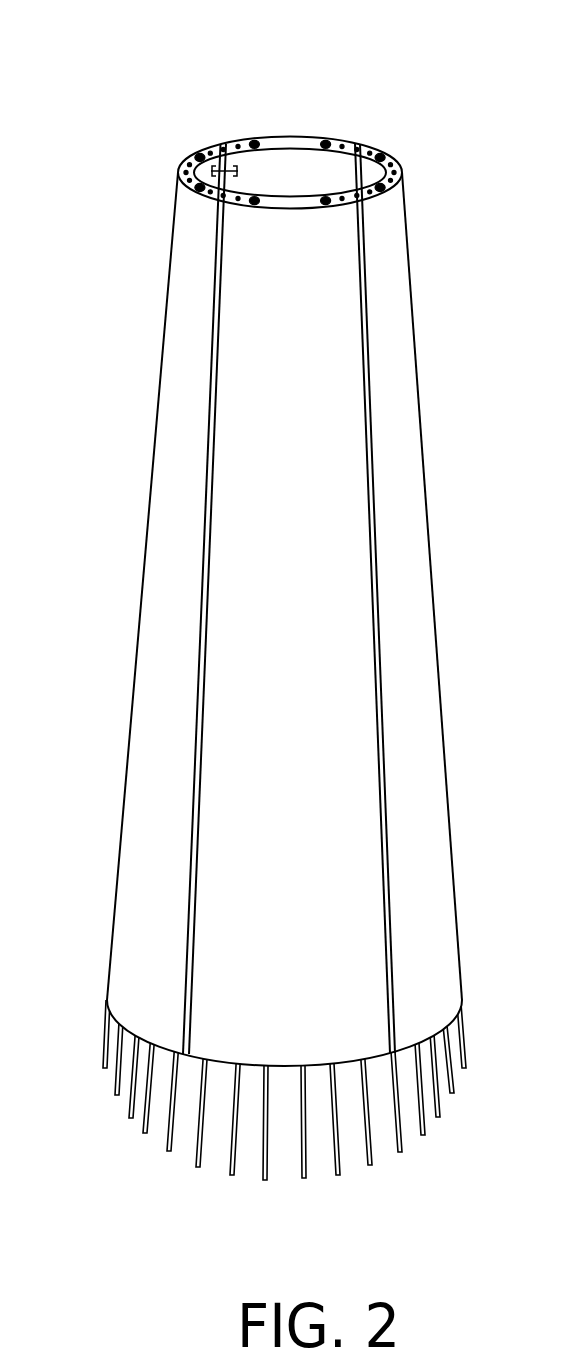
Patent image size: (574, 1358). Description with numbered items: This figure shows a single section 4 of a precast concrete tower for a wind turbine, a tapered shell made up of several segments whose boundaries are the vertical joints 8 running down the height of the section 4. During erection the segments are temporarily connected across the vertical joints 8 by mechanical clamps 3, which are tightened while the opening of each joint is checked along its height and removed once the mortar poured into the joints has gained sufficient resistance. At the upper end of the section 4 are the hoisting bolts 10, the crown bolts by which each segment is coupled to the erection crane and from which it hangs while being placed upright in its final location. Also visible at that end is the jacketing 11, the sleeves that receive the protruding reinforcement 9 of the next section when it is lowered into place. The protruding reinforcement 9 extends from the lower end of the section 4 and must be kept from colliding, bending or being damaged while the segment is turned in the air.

The mechanical clamp 3 is at (235, 172).
The section 4 is at (148, 408).
The vertical joint 8 is at (289, 599).
The protruding reinforcement 9 is at (284, 1090).
The hoisting bolt 10 is at (256, 139).
The jacketing 11 is at (400, 176).